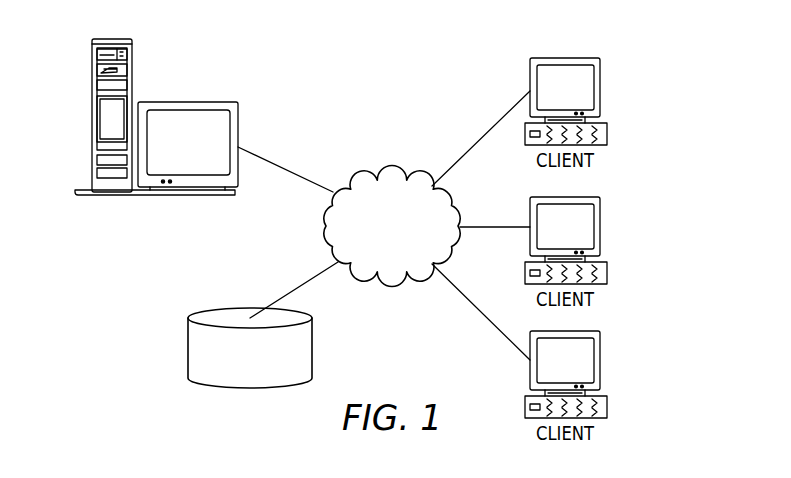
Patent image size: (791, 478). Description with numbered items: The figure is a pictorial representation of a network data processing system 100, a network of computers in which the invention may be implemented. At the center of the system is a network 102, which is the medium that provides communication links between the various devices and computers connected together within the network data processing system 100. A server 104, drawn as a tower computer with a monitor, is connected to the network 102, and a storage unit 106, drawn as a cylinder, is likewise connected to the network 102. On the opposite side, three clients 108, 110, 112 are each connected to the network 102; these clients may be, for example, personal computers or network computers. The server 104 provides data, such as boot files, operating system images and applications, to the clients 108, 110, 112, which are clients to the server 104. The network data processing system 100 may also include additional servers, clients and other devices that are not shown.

The network data processing system 100 is at (448, 68).
The network 102 is at (364, 182).
The server 104 is at (92, 118).
The storage unit 106 is at (188, 348).
The client 108 is at (600, 88).
The client 110 is at (600, 225).
The client 112 is at (600, 358).